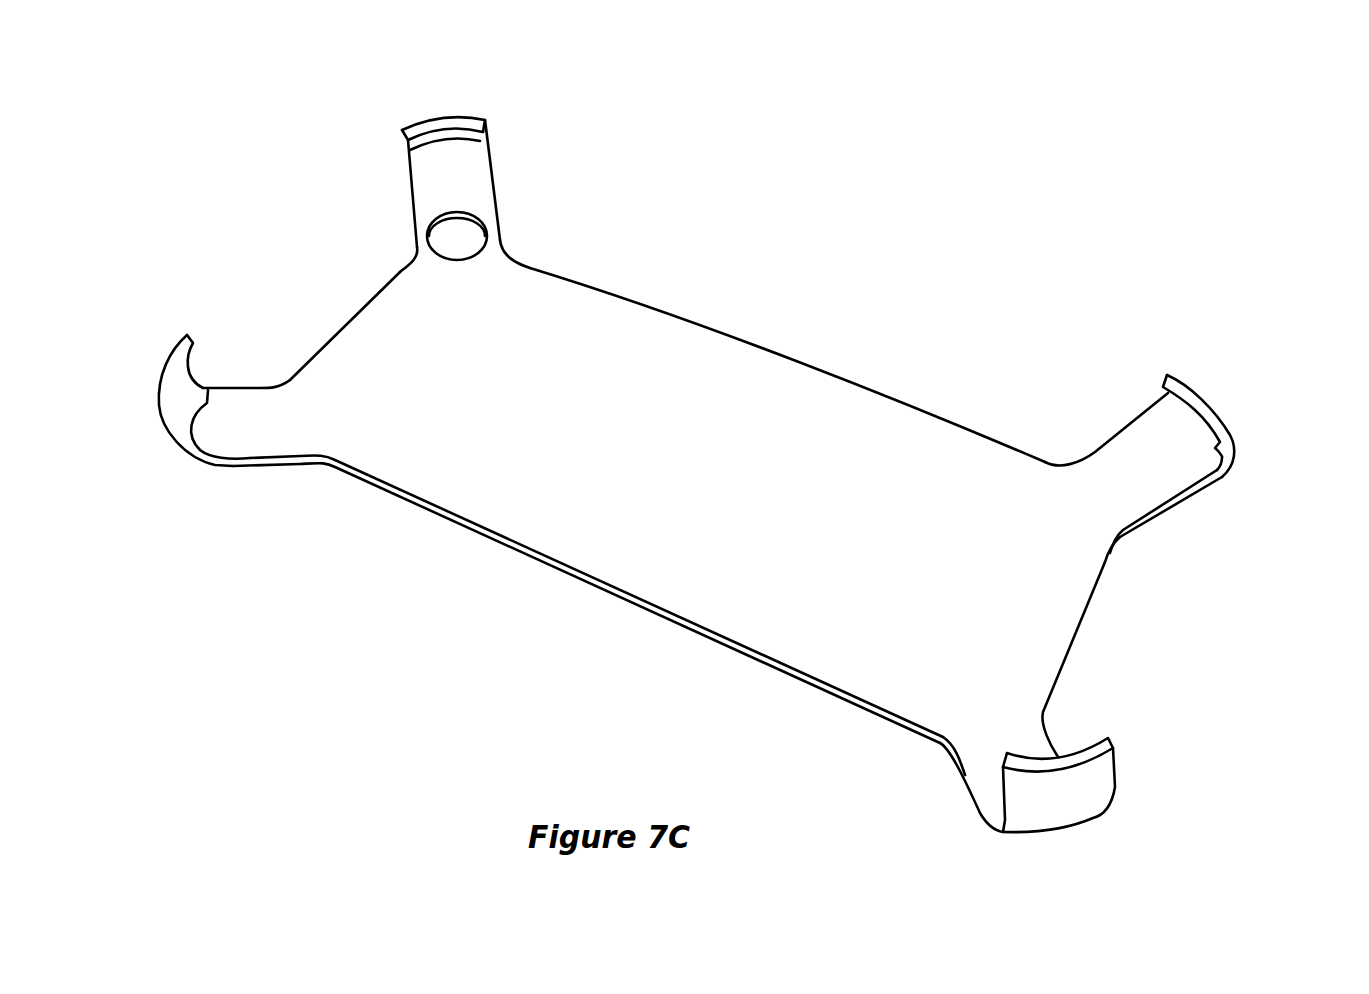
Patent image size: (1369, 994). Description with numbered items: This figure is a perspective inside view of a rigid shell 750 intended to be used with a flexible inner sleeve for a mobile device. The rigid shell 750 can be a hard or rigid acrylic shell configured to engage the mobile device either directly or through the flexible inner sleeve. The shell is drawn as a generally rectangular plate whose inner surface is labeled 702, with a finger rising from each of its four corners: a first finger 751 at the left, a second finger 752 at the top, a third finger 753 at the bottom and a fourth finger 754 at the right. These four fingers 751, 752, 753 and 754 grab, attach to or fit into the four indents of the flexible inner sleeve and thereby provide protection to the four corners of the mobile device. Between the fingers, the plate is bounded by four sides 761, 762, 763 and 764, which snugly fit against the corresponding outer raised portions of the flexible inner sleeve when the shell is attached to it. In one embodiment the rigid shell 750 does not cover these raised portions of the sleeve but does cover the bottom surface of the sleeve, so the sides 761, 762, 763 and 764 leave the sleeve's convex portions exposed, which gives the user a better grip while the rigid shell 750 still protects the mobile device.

The cover plate body 702 is at (750, 560).
The rigid shell 750 is at (974, 283).
The finger 751 is at (190, 364).
The finger 752 is at (432, 116).
The finger 753 is at (1116, 768).
The finger 754 is at (1213, 403).
The side 761 is at (363, 317).
The side 762 is at (723, 333).
The side 763 is at (1080, 622).
The side 764 is at (602, 592).